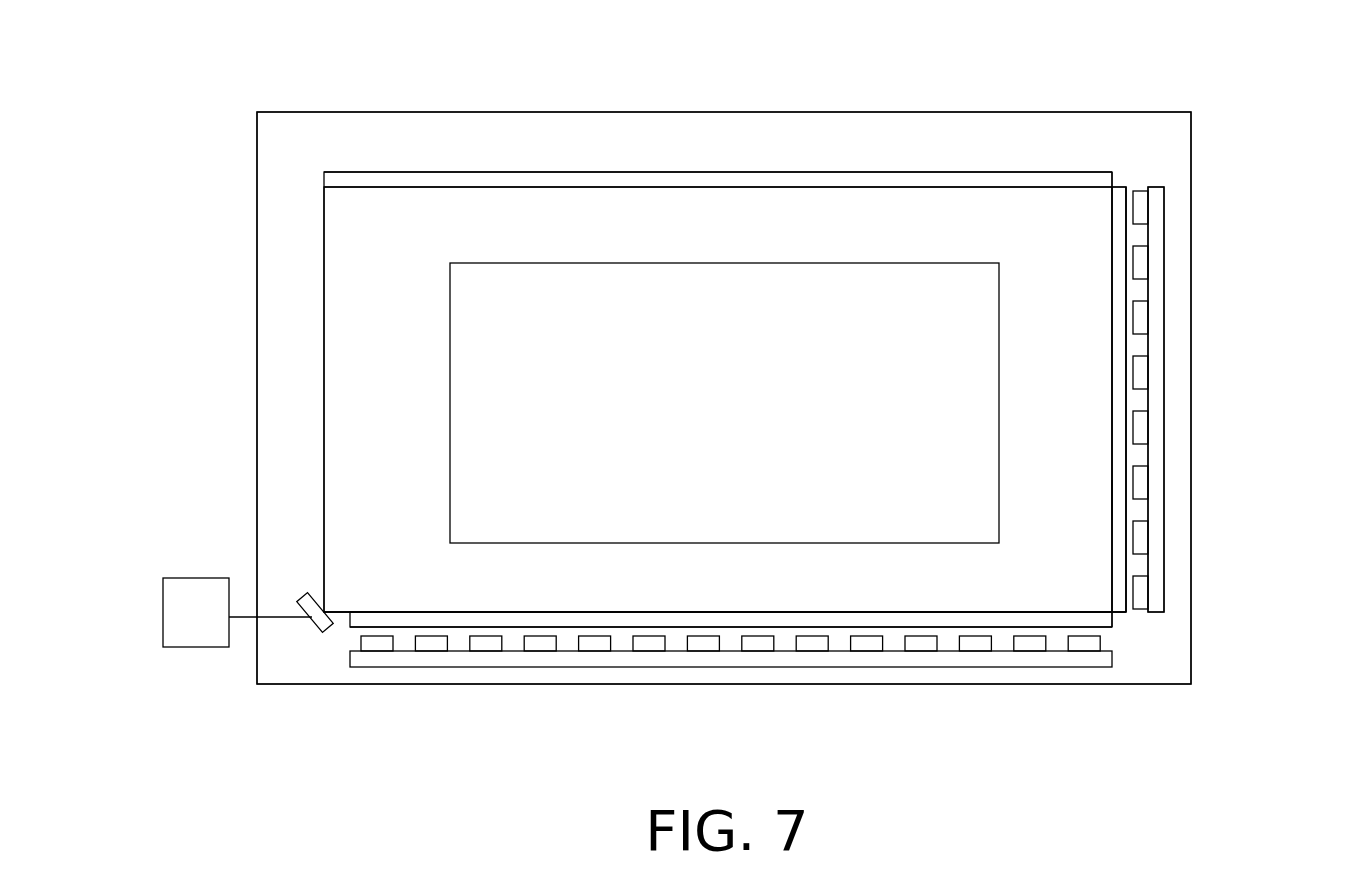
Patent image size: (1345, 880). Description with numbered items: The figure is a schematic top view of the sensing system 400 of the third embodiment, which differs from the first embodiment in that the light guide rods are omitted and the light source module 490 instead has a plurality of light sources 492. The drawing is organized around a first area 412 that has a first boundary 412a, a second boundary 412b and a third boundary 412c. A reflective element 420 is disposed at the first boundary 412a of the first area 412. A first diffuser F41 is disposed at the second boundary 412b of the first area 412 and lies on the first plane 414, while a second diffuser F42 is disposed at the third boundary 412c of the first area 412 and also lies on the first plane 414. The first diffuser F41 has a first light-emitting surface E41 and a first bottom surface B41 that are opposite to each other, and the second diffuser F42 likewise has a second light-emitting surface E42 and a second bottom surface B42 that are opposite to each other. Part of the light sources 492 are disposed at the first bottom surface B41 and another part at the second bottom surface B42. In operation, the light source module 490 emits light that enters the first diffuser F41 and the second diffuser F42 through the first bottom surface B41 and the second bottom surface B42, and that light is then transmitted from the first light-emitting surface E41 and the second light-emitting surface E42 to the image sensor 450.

The sensing system 400 is at (1292, 758).
The first area 412 is at (347, 243).
The first boundary 412a is at (367, 187).
The second boundary 412b is at (1113, 290).
The third boundary 412c is at (462, 612).
The first plane 414 is at (888, 133).
The reflective element 420 is at (713, 178).
The image sensor 450 is at (310, 628).
The light source module 490 is at (1139, 175).
The light sources 492 is at (1140, 207).
The first diffuser F41 is at (1120, 372).
The first bottom surface B41 is at (1127, 452).
The first light-emitting surface E41 is at (1100, 500).
The second diffuser F42 is at (634, 619).
The second bottom surface B42 is at (950, 628).
The second light-emitting surface E42 is at (727, 604).